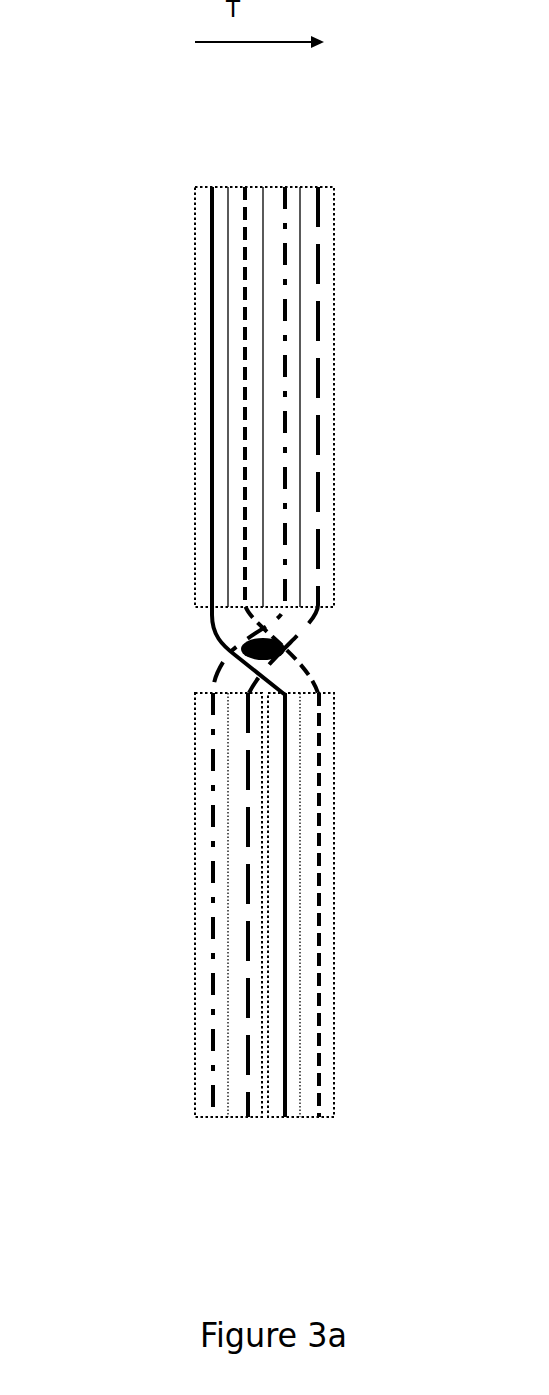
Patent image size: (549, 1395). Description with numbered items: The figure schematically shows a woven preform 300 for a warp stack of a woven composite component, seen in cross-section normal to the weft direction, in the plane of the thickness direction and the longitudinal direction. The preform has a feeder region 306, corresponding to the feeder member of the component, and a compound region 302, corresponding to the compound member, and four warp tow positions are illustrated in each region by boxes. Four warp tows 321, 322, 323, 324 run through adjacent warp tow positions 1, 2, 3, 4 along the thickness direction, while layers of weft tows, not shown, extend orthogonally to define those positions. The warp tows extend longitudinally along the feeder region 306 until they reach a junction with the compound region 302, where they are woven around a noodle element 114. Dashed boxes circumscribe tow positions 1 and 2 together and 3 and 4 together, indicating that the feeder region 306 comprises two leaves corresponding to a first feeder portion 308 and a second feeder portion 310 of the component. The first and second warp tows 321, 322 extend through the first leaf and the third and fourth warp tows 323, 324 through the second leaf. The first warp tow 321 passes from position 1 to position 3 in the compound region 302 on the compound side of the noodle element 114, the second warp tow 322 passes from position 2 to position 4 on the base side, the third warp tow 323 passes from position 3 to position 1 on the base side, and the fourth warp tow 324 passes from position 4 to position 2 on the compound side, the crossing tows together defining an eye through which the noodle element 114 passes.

The woven preform 300 is at (68, 124).
The compound region 302 is at (166, 339).
The feeder region 306 is at (159, 857).
The noodle element 114 is at (243, 648).
The first feeder portion 308 is at (262, 1130).
The second feeder portion 310 is at (334, 1130).
The first warp tow 321 is at (208, 937).
The second warp tow 322 is at (247, 972).
The third warp tow 323 is at (286, 913).
The fourth warp tow 324 is at (319, 1008).
The first warp tow position 1 is at (208, 160).
The second warp tow position 2 is at (247, 160).
The third warp tow position 3 is at (285, 160).
The fourth warp tow position 4 is at (322, 160).